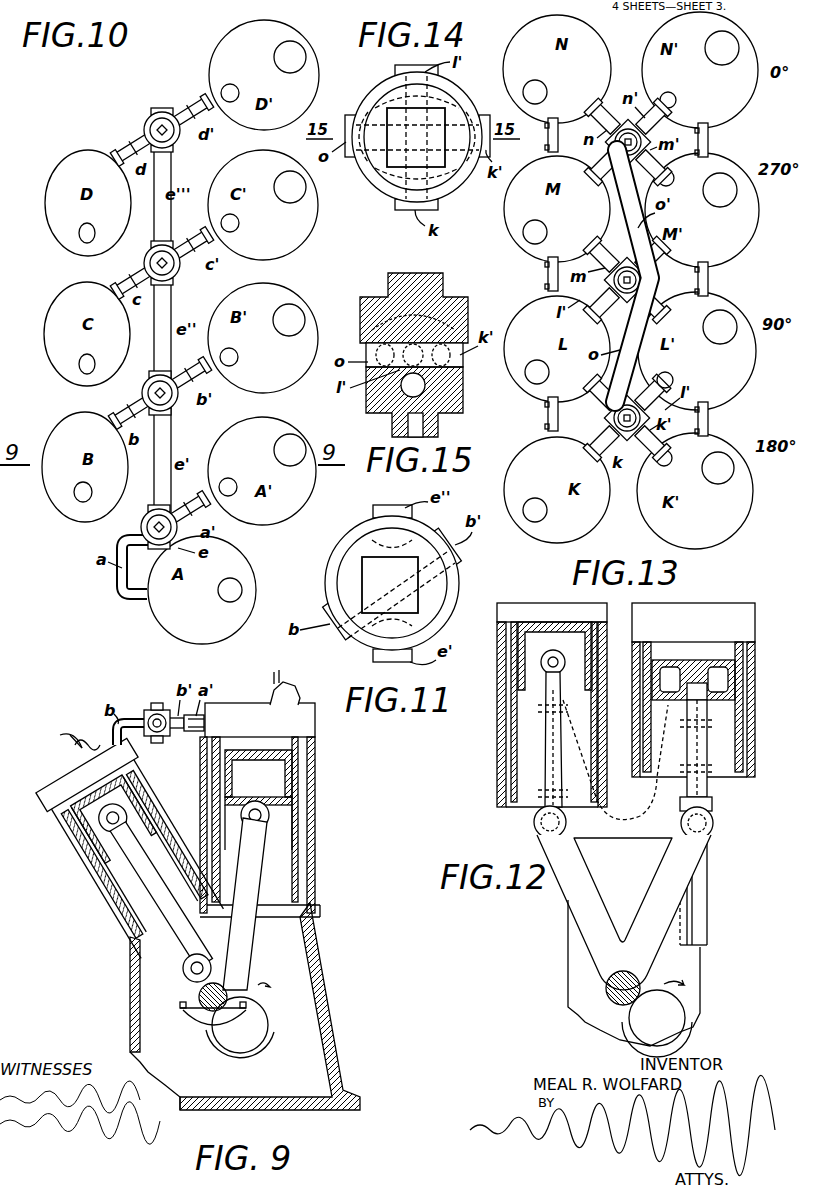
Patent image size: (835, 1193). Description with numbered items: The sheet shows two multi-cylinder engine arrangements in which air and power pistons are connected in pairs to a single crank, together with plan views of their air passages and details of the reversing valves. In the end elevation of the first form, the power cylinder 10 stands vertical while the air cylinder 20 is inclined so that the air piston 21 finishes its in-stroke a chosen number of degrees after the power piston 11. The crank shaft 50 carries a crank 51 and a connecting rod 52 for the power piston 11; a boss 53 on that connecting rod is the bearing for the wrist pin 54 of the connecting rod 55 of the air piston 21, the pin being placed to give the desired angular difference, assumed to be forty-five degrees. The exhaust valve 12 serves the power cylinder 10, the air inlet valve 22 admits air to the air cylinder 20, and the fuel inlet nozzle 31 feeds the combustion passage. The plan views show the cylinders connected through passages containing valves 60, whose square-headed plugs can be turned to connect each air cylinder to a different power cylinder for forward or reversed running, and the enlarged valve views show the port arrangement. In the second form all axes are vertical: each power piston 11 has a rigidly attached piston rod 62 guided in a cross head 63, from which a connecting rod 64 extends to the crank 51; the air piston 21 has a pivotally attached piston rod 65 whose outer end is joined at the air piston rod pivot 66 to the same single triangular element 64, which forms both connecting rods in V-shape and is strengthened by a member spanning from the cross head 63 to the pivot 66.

In FIG. 9, the power cylinder 10 is at (305, 886).
In FIG. 12, the power cylinder 10 is at (730, 750).
In FIG. 9, the power piston 11 is at (298, 836).
In FIG. 12, the power piston 11 is at (728, 682).
In FIG. 10, the exhaust valve 12 is at (294, 452).
In FIG. 13, the exhaust valve 12 is at (726, 326).
In FIG. 9, the exhaust valve 12 is at (295, 690).
In FIG. 9, the air cylinder 20 is at (132, 944).
In FIG. 12, the air cylinder 20 is at (504, 746).
In FIG. 9, the air piston 21 is at (84, 851).
In FIG. 12, the air piston 21 is at (511, 704).
In FIG. 10, the air inlet valve 22 is at (80, 498).
In FIG. 13, the air inlet valve 22 is at (533, 378).
In FIG. 9, the air inlet valve 22 is at (80, 746).
In FIG. 10, the fuel inlet nozzle 31 is at (231, 481).
In FIG. 13, the fuel inlet nozzle 31 is at (671, 377).
In FIG. 9, the crank shaft 50 is at (255, 1022).
In FIG. 12, the crank shaft 50 is at (665, 1020).
In FIG. 9, the crank 51 is at (198, 1013).
In FIG. 12, the crank 51 is at (606, 990).
In FIG. 9, the connecting rod 52 is at (244, 940).
In FIG. 9, the boss 53 is at (178, 1000).
In FIG. 9, the wrist pin 54 is at (185, 975).
In FIG. 9, the connecting rod of air piston 55 is at (155, 895).
In FIG. 10, the valve 60 is at (148, 126).
In FIG. 14, the valve 60 is at (385, 172).
In FIG. 15, the valve 60 is at (455, 302).
In FIG. 11, the valve 60 is at (360, 565).
In FIG. 13, the valve 60 is at (660, 281).
In FIG. 9, the valve 60 is at (160, 704).
In FIG. 12, the piston rod 62 is at (700, 733).
In FIG. 12, the cross head 63 is at (703, 868).
In FIG. 12, the connecting rod 64 is at (665, 900).
In FIG. 12, the air piston rod 65 is at (545, 766).
In FIG. 12, the air piston rod pivot 66 is at (540, 823).